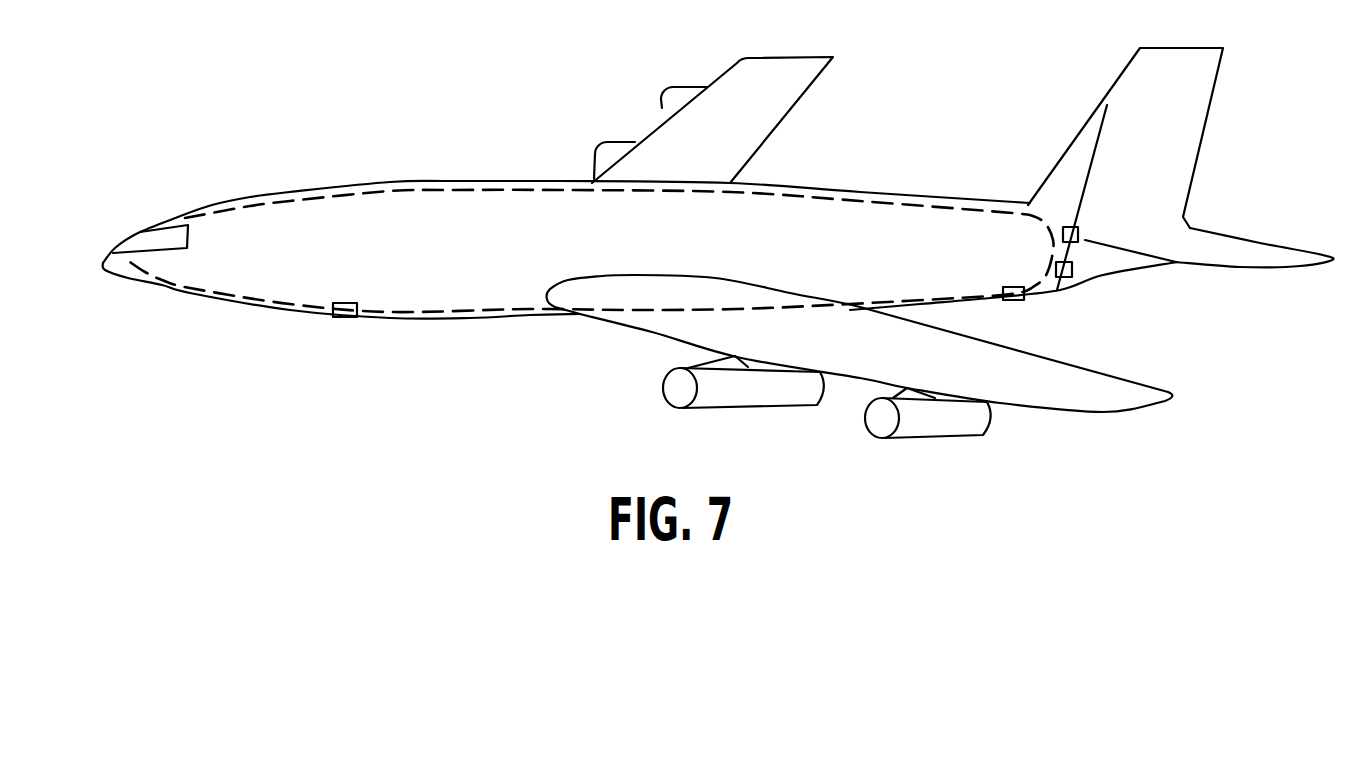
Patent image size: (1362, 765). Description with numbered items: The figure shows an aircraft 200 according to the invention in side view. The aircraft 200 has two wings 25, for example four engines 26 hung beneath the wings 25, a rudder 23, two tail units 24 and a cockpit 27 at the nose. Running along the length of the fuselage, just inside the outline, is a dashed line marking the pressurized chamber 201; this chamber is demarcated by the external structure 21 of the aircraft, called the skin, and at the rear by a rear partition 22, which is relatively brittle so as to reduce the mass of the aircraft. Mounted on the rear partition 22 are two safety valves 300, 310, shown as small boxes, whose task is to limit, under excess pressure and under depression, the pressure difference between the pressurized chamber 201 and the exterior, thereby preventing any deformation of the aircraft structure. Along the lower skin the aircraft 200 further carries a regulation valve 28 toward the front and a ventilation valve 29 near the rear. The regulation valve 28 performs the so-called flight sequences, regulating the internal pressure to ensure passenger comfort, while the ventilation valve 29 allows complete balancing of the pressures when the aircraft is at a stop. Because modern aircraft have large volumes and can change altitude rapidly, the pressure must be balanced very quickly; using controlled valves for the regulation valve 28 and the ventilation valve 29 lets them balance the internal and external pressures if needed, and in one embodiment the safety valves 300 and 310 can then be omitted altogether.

The aircraft 200 is at (294, 180).
The pressurized chamber 201 is at (945, 208).
The external structure 21 is at (437, 318).
The rear partition 22 is at (1103, 128).
The rudder 23 is at (1213, 105).
The tail unit 24 is at (1248, 247).
The wing 25 is at (793, 103).
The engine 26 is at (662, 93).
The cockpit 27 is at (138, 233).
The regulation valve 28 is at (345, 317).
The ventilation valve 29 is at (1013, 300).
The safety valve 300 is at (1080, 235).
The safety valve 310 is at (1073, 269).